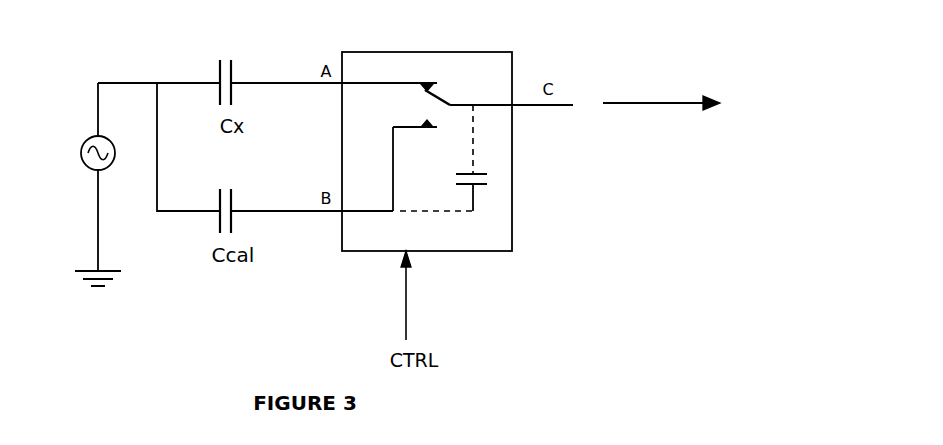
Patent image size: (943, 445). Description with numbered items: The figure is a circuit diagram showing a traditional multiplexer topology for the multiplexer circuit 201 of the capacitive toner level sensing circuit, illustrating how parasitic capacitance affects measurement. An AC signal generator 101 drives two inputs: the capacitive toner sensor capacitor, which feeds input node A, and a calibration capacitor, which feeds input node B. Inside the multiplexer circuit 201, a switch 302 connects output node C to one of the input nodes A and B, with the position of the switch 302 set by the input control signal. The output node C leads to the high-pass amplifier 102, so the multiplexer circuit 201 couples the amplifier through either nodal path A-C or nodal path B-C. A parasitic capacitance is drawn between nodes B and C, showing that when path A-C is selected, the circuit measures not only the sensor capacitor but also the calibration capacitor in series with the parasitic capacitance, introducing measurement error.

The AC signal generator 101 is at (85, 118).
The multiplexer circuit 201 is at (433, 153).
The switch 302 is at (452, 88).
The high-pass amplifier 102 is at (660, 83).